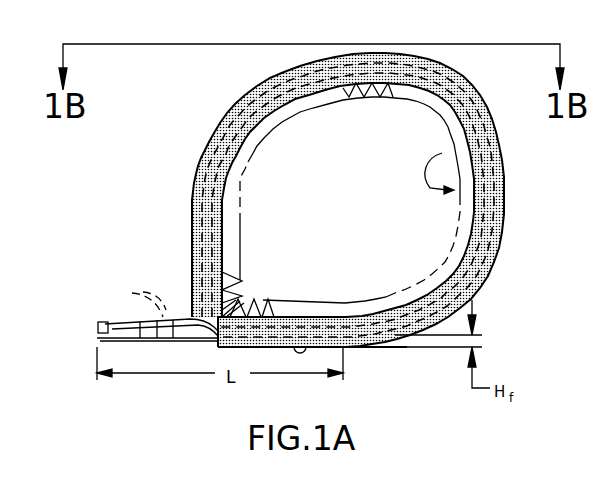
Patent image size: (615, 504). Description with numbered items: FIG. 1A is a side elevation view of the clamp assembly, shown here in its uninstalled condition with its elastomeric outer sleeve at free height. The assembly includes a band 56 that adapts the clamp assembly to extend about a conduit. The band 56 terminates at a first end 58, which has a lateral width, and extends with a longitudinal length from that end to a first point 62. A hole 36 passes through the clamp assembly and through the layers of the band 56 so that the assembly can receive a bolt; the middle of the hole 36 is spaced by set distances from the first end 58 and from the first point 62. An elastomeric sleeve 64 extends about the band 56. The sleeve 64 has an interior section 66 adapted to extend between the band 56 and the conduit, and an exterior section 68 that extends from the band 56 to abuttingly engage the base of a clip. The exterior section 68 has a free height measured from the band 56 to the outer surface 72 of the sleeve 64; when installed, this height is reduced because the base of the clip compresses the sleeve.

The hole 36 is at (133, 294).
The band 56 is at (199, 325).
The first end 58 is at (98, 328).
The first point 62 is at (350, 348).
The elastomeric sleeve 64 is at (478, 257).
The interior section 66 is at (442, 153).
The exterior section 68 is at (522, 182).
The outer surface 72 is at (313, 345).